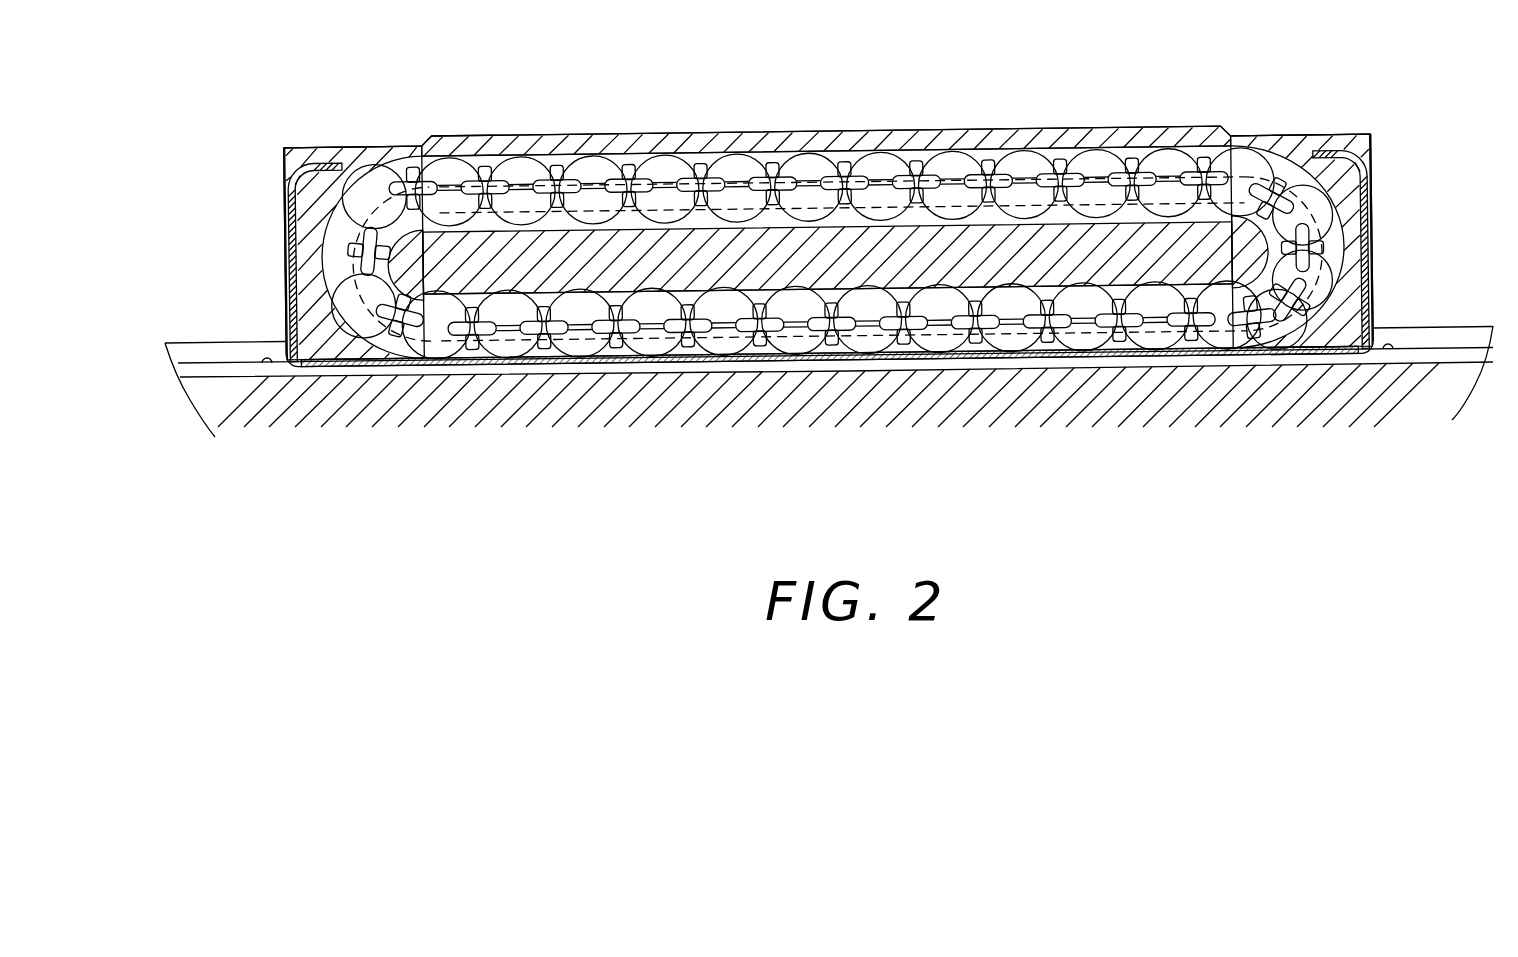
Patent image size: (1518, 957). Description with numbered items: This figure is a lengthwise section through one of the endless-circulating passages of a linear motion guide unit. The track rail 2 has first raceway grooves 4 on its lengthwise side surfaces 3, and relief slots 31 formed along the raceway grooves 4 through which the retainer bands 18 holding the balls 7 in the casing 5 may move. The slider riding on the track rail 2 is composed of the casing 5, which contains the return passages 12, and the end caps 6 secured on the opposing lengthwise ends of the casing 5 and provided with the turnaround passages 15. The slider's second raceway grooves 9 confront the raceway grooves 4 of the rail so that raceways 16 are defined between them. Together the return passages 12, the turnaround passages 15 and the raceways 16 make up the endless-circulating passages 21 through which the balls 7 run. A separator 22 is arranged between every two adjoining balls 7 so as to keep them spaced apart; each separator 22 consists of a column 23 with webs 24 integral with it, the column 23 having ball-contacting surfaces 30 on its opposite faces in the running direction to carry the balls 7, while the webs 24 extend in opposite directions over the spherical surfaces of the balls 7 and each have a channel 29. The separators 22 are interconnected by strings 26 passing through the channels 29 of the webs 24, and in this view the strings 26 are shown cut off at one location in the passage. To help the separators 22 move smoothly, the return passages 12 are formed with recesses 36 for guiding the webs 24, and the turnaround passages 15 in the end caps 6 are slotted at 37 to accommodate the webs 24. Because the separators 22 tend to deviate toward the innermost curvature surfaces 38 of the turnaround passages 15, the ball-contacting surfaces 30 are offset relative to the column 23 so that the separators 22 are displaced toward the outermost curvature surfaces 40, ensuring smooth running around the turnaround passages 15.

The track rail 2 is at (1112, 392).
The lengthwise side surfaces 3 is at (1440, 327).
The first raceway grooves 4 is at (1395, 347).
The casing 5 is at (863, 270).
The end caps 6 is at (1342, 187).
The balls 7 is at (1075, 352).
The second raceway grooves 9 is at (747, 295).
The return passages 12 is at (852, 150).
The turnaround passages 15 is at (1300, 166).
The raceways 16 is at (773, 356).
The retainer bands 18 is at (1233, 356).
The endless-circulating passages 21 is at (1130, 357).
The separators 22 is at (543, 335).
The column 23 is at (976, 340).
The webs 24 is at (915, 332).
The strings 26 is at (498, 330).
The channel 29 is at (1144, 345).
The ball-contacting surfaces 30 is at (995, 352).
The relief slots 31 is at (1433, 347).
The recesses 36 is at (735, 165).
The slots 37 is at (366, 195).
The innermost curvature surfaces 38 is at (347, 258).
The outermost curvature surfaces 40 is at (1368, 274).